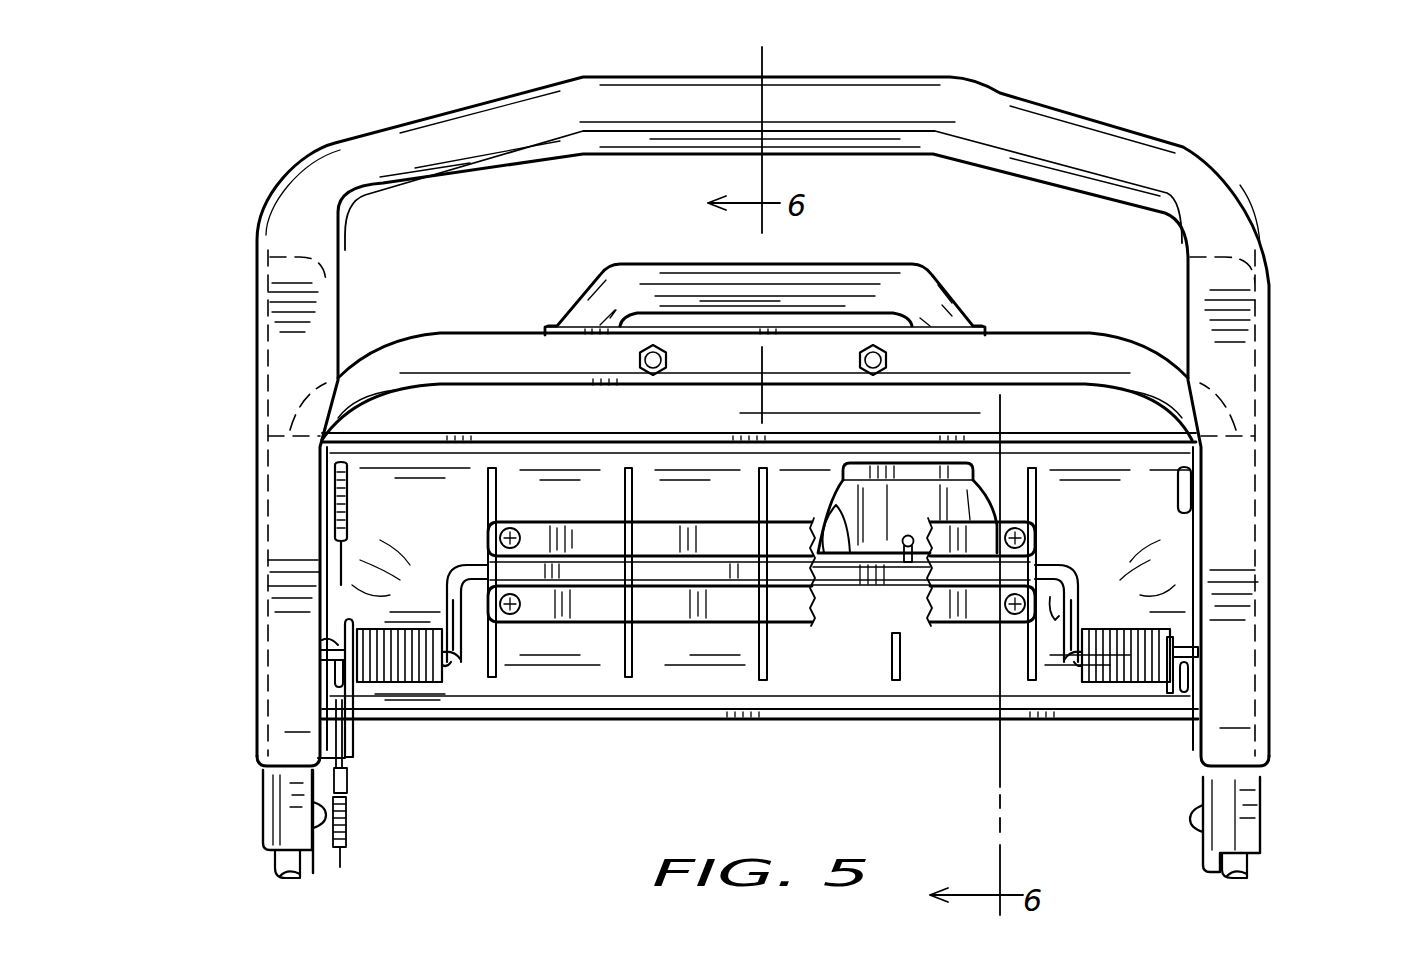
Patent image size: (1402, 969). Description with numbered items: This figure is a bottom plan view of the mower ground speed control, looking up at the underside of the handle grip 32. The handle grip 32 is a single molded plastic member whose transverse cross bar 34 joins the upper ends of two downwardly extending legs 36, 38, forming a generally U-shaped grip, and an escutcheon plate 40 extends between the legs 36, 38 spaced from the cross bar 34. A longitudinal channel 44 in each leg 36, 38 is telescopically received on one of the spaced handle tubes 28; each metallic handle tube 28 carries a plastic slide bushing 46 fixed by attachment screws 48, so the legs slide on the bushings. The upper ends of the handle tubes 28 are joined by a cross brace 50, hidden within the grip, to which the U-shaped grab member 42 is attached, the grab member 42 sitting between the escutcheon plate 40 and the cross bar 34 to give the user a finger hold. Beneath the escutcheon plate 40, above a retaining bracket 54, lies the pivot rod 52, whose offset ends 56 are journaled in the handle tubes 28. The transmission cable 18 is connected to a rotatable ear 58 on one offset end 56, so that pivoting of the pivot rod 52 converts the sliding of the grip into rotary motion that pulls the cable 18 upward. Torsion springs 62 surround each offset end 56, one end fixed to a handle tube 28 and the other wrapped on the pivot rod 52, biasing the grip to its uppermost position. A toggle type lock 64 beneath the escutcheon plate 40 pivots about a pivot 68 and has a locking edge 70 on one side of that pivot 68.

The transmission cable 18 is at (348, 822).
The handle tube 28 is at (272, 855).
The handle grip 32 is at (1214, 152).
The cross bar 34 is at (1012, 102).
The leg 36 is at (1240, 530).
The leg 38 is at (257, 570).
The escutcheon plate 40 is at (675, 680).
The grab member 42 is at (632, 263).
The longitudinal channel 44 is at (262, 325).
The slide bushing 46 is at (282, 797).
The attachment screw 48 is at (330, 818).
The cross brace 50 is at (460, 330).
The pivot rod 52 is at (892, 578).
The retaining bracket 54 is at (782, 625).
The offset end 56 is at (328, 655).
The ear 58 is at (328, 630).
The torsion spring 62 is at (436, 684).
The lock 64 is at (1005, 496).
The pivot 68 is at (912, 565).
The locking edge 70 is at (832, 540).